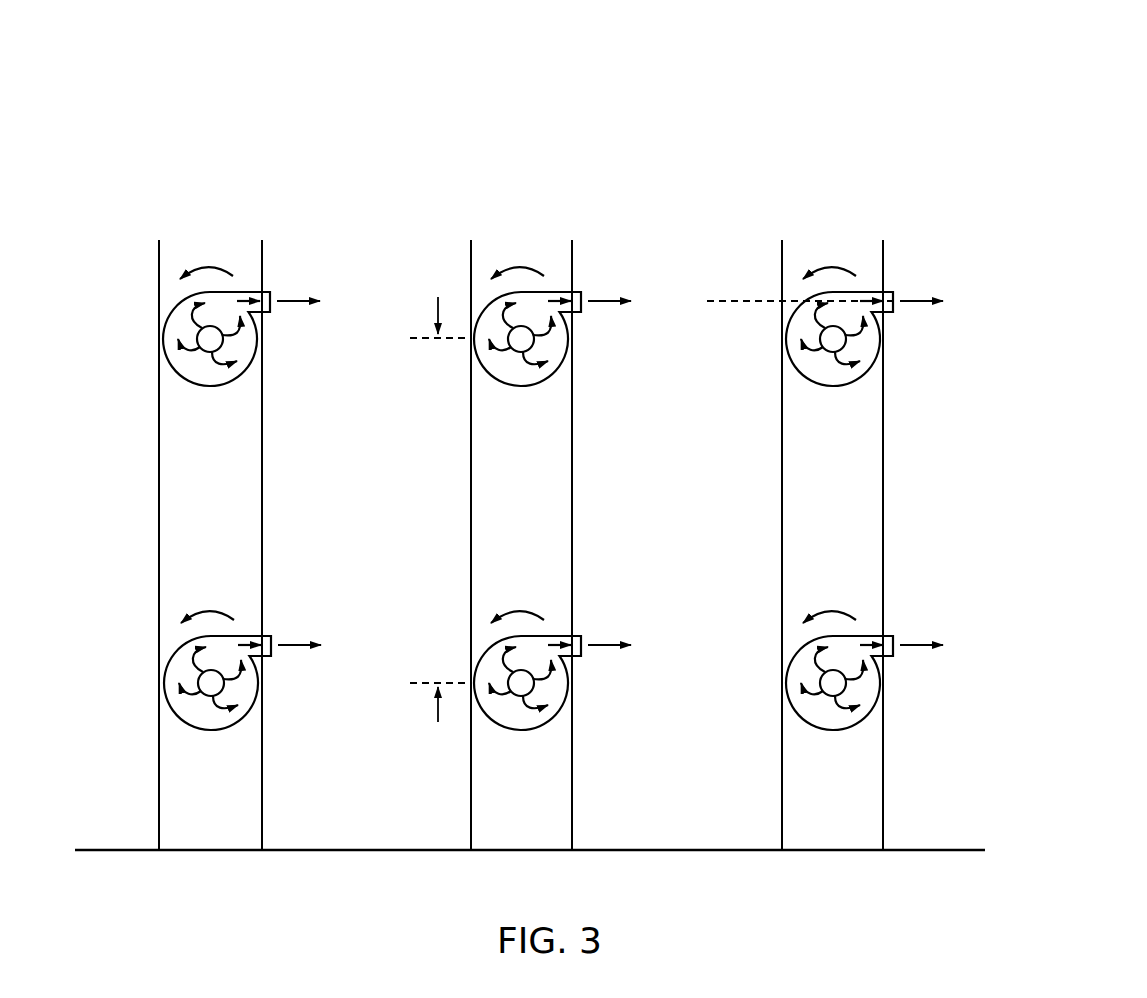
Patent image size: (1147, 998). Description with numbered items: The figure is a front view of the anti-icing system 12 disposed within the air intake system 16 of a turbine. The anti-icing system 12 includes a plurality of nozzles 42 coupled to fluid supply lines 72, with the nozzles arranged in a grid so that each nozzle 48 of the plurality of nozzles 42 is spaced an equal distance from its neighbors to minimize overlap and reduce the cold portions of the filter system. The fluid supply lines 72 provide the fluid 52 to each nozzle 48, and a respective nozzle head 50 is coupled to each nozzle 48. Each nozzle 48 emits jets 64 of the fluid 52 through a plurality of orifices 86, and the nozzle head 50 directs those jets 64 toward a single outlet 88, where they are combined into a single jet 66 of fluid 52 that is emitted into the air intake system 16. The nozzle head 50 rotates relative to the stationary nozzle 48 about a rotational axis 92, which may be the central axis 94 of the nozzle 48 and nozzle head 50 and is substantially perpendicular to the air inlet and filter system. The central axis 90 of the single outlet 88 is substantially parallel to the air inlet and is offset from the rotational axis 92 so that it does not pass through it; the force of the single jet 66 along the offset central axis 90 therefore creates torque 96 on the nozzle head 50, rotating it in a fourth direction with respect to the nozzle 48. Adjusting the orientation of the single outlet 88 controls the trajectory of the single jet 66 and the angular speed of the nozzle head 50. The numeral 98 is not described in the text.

The anti-icing system 12 is at (465, 197).
The air intake system 16 is at (536, 135).
The plurality of nozzles 42 is at (146, 671).
The nozzle 48 is at (146, 671).
The nozzle head 50 is at (192, 692).
The fluid 52 is at (270, 776).
The jets 64 is at (225, 801).
The single jet 66 is at (314, 677).
The fluid supply lines 72 is at (173, 830).
The plurality of orifices 86 is at (866, 748).
The single outlet 88 is at (550, 285).
The central axis 90 is at (801, 269).
The rotational axis 92 is at (901, 357).
The central axis 94 is at (901, 357).
The torque 96 is at (832, 228).
The rotation arrow 98 is at (832, 228).